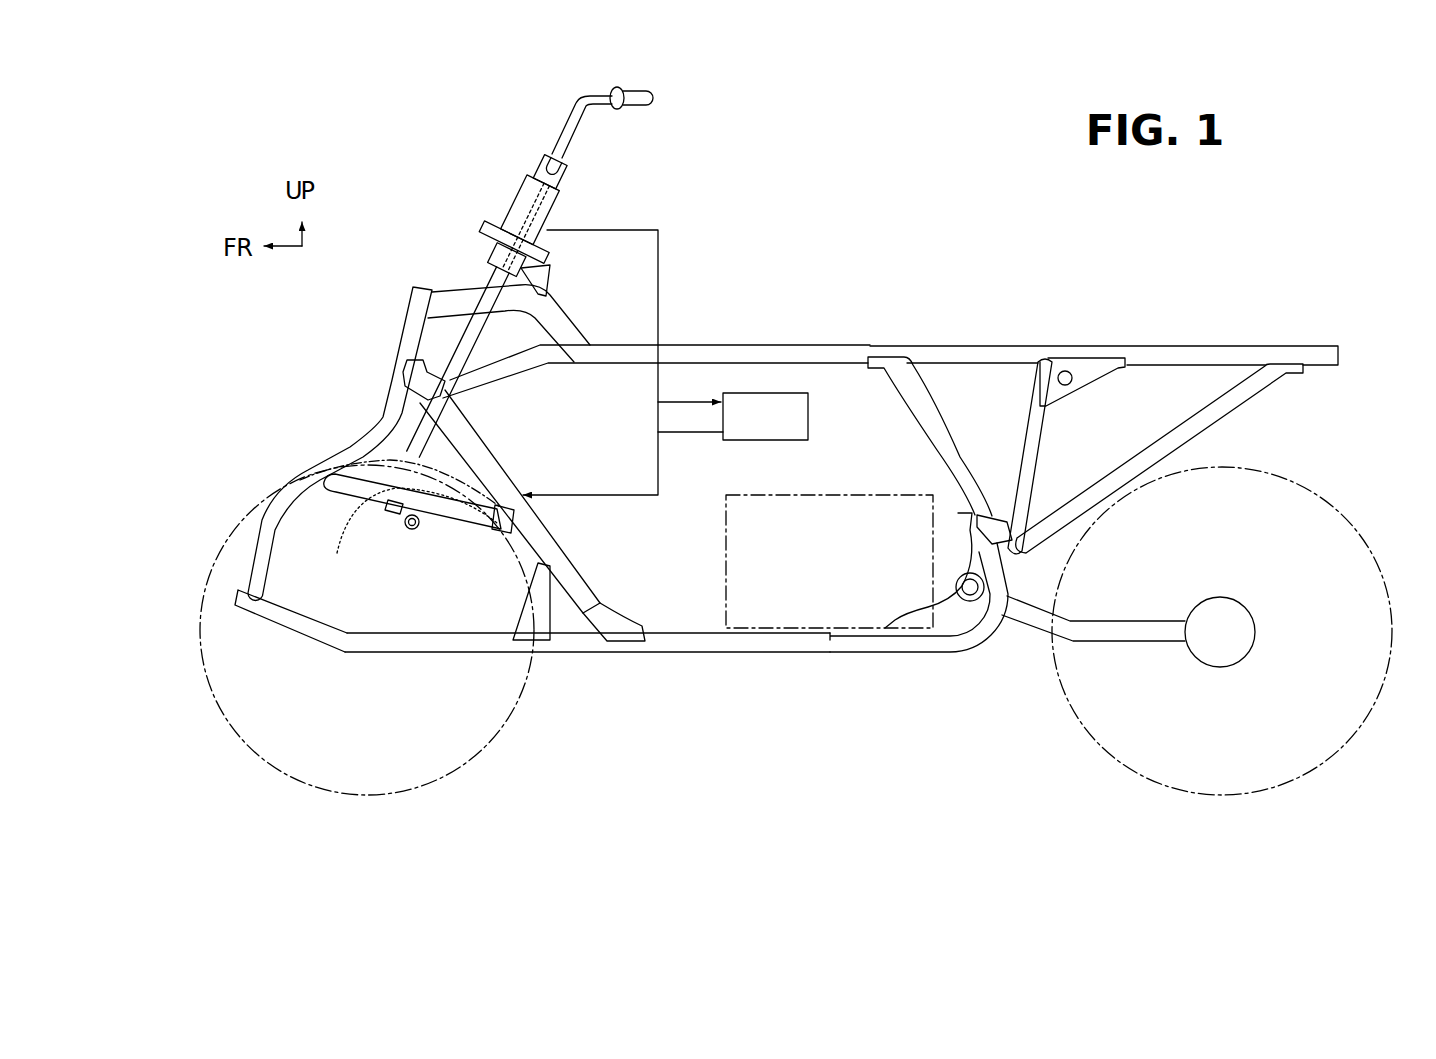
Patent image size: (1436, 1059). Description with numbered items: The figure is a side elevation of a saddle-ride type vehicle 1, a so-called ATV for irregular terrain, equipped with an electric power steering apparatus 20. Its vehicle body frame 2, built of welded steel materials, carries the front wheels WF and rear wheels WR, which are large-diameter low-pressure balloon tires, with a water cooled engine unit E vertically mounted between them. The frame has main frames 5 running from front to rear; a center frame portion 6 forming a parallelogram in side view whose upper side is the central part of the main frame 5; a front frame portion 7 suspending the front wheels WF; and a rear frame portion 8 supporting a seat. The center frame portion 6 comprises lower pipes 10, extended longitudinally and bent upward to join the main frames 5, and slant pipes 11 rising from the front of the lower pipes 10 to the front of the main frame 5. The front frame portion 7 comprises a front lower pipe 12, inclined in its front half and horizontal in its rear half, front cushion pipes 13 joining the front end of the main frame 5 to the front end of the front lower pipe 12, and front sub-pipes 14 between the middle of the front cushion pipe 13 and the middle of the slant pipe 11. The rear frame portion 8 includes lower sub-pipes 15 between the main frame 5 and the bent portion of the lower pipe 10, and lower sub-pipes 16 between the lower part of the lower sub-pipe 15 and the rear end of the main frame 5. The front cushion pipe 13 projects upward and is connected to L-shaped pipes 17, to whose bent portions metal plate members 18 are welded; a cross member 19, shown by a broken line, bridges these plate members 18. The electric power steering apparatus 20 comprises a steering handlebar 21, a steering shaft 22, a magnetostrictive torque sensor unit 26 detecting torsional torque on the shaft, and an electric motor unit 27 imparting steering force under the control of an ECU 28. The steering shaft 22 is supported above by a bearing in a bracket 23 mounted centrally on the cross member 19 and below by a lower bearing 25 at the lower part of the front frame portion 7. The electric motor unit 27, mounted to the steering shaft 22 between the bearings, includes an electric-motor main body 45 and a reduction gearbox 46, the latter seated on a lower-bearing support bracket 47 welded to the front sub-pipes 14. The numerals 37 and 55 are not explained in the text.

The saddle-ride type vehicle 1 is at (864, 166).
The vehicle body frame 2 is at (784, 344).
The main frame 5 is at (735, 348).
The center frame portion 6 is at (865, 658).
The front frame portion 7 is at (370, 654).
The rear frame portion 8 is at (1161, 344).
The lower pipe 10 is at (710, 646).
The slant pipe 11 is at (572, 600).
The front lower pipe 12 is at (305, 625).
The front cushion pipe 13 is at (387, 420).
The front sub-pipe 14 is at (440, 510).
The lower sub-pipe 15 is at (1037, 442).
The lower sub-pipe 16 is at (1222, 410).
The L-shaped pipe 17 is at (453, 298).
The metal plate member 18 is at (542, 287).
The cross member 19 is at (537, 277).
The electric power steering apparatus 20 is at (525, 239).
The steering handlebar 21 is at (600, 90).
The steering shaft 22 is at (480, 277).
The bracket 23 is at (490, 280).
The lower bearing 25 is at (350, 525).
The magnetostrictive torque sensor unit 26 is at (512, 181).
The electric motor unit 27 is at (505, 481).
The ECU 28 is at (810, 420).
The handle clamp 37 is at (561, 203).
The electric-motor main body 45 is at (508, 487).
The reduction gearbox 46 is at (408, 405).
The lower-bearing support bracket 47 is at (362, 467).
The sensor bolt 55 is at (408, 528).
The engine unit E is at (723, 569).
The front wheel WF is at (490, 747).
The rear wheel WR is at (1068, 708).